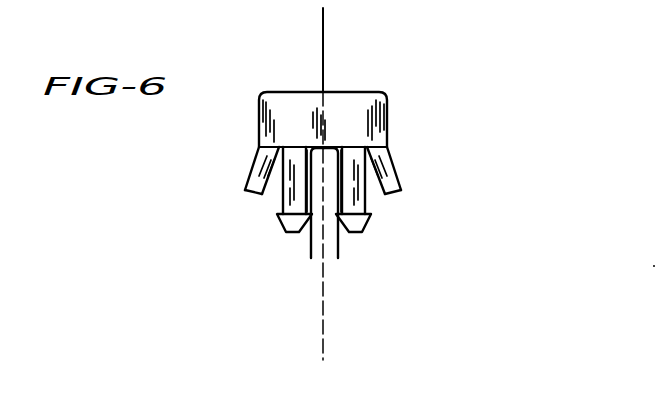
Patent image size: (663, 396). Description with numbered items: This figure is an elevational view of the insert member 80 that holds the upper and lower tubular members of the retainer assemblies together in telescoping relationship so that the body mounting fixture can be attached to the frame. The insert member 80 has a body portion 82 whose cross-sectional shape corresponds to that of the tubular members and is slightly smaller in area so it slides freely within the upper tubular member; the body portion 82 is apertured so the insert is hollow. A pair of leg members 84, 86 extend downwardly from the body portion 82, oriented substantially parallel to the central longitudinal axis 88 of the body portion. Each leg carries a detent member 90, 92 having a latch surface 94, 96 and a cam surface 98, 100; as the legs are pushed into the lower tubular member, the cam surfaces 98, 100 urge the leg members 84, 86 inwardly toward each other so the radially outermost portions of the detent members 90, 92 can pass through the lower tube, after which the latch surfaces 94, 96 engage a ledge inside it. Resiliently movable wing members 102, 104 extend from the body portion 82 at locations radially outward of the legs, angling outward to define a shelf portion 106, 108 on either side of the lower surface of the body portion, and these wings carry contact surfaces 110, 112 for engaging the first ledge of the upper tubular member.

The insert member 80 is at (259, 89).
The body portion 82 is at (375, 122).
The leg member 84 is at (311, 258).
The leg member 86 is at (338, 258).
The central longitudinal axis 88 is at (323, 47).
The detent member 90 is at (284, 232).
The detent member 92 is at (373, 220).
The latch surface 94 is at (281, 220).
The latch surface 96 is at (369, 212).
The cam surface 98 is at (292, 236).
The cam surface 100 is at (367, 218).
The wing member 102 is at (250, 176).
The wing member 104 is at (398, 178).
The shelf portion 106 is at (280, 203).
The shelf portion 108 is at (394, 164).
The contact surface 110 is at (253, 196).
The contact surface 112 is at (396, 193).